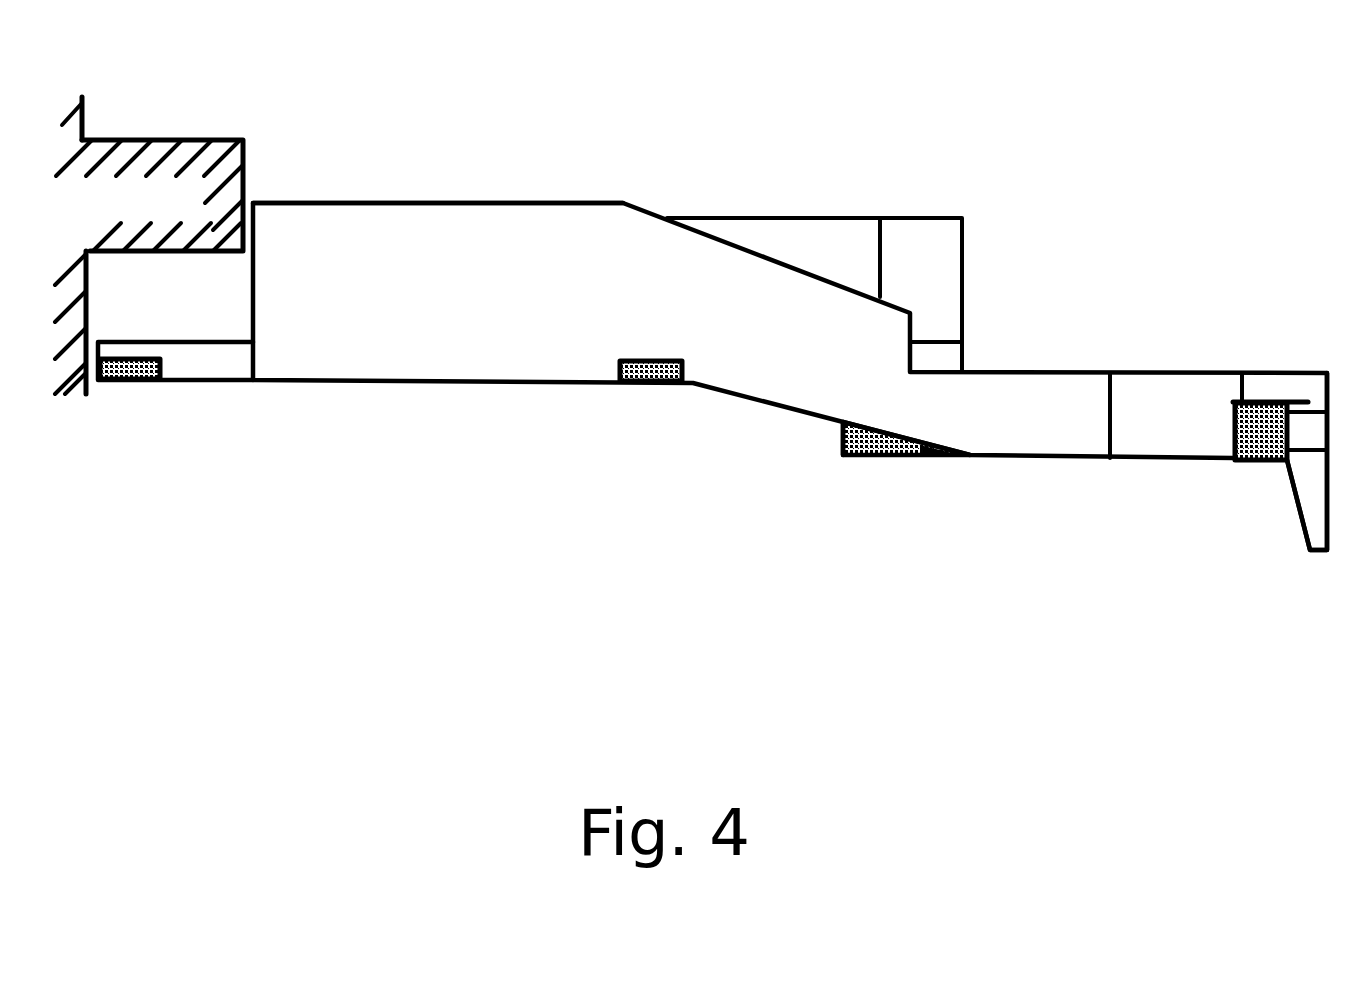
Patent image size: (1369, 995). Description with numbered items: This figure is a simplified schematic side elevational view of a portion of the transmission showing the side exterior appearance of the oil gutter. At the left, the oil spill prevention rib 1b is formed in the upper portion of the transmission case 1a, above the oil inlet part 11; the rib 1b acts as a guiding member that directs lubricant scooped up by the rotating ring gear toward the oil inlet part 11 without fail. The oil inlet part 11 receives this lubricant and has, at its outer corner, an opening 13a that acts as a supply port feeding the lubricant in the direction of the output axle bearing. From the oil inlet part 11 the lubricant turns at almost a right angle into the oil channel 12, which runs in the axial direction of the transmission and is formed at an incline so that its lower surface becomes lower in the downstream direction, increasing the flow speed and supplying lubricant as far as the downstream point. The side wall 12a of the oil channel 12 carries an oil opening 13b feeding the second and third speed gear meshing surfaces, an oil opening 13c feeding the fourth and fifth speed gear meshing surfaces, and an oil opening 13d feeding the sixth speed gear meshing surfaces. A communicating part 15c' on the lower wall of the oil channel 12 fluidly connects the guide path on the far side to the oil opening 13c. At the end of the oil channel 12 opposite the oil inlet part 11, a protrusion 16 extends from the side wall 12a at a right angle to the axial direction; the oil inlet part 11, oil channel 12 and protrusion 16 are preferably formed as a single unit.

The transmission case 1a is at (50, 137).
The oil spill prevention rib 1b is at (243, 150).
The oil inlet part 11 is at (222, 381).
The oil channel 12 is at (542, 381).
The side wall 12a is at (460, 338).
The opening 13a is at (138, 381).
The oil opening 13b is at (658, 383).
The oil opening 13c is at (862, 457).
The oil opening 13d is at (1233, 462).
The communicating part 15c' is at (800, 500).
The protrusion 16 is at (1317, 520).